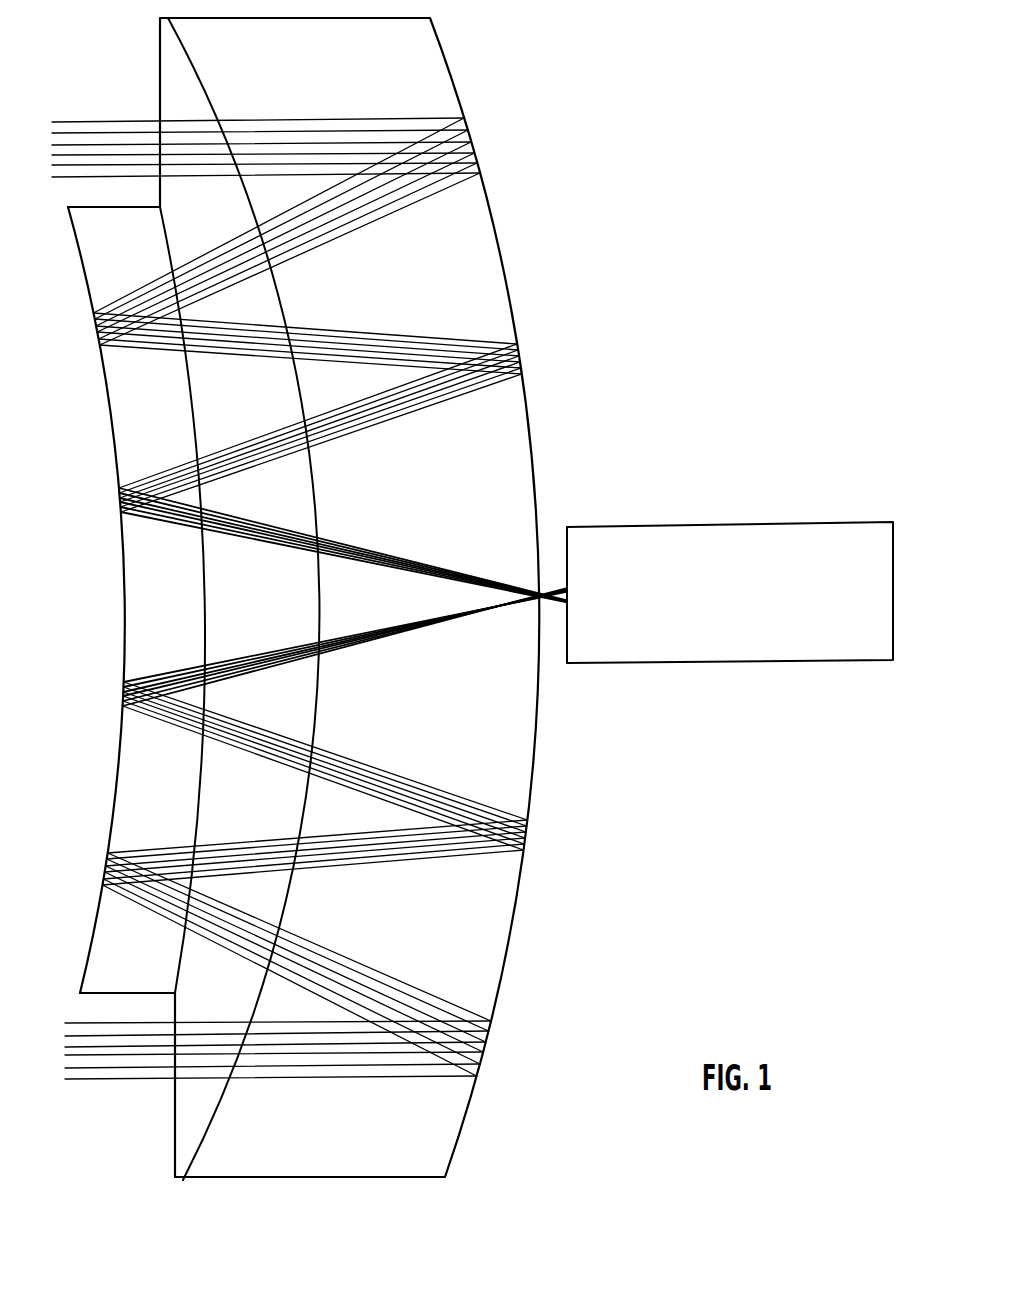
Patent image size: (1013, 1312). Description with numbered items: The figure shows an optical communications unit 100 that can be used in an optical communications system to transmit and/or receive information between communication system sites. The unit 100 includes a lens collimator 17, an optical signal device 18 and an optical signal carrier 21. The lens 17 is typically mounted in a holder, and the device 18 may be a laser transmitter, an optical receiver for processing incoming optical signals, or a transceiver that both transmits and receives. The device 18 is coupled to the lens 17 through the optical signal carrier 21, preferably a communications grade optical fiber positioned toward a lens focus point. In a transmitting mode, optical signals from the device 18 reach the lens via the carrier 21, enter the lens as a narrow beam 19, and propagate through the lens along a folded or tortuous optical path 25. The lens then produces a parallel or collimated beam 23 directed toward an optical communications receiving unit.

The optical communications unit 100 is at (758, 240).
The lens collimator 17 is at (538, 170).
The optical signal device 18 is at (803, 524).
The narrow beam 19 is at (541, 594).
The optical signal carrier 21 is at (547, 596).
The collimated beam 23 is at (95, 120).
The folded optical path 25 is at (153, 388).